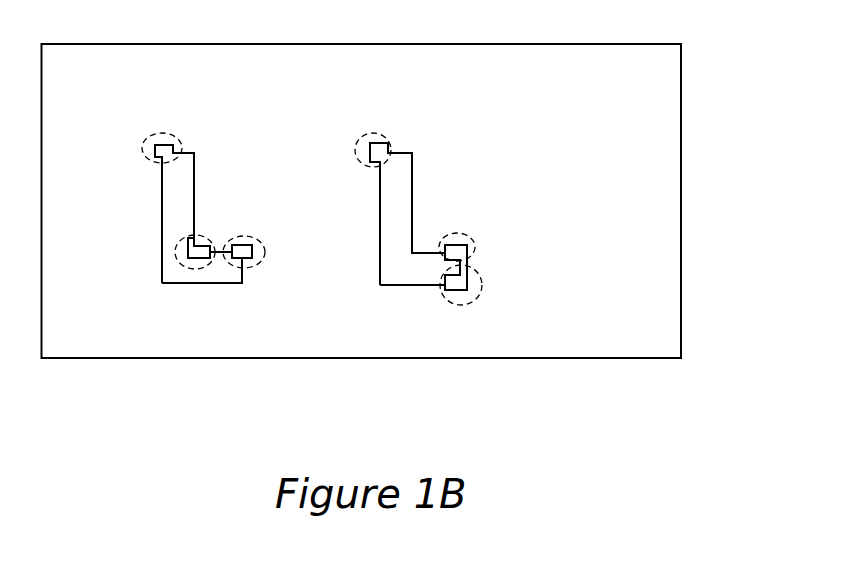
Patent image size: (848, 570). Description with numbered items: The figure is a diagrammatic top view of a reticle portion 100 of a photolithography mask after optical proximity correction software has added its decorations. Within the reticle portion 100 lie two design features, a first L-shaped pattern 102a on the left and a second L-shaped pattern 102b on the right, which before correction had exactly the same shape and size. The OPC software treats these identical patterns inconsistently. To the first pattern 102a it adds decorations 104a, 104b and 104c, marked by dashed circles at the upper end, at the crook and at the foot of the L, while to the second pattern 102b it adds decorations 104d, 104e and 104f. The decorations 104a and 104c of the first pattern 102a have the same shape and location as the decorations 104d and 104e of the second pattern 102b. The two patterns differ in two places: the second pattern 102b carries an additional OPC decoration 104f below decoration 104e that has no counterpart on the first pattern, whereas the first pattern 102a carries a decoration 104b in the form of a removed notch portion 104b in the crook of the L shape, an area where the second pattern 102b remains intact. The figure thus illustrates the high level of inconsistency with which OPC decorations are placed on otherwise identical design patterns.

The reticle portion 100 is at (655, 115).
The first L-shaped pattern 102a is at (188, 181).
The second L-shaped pattern 102b is at (408, 182).
The OPC decoration 104a is at (158, 133).
The removed notch portion 104b is at (208, 241).
The OPC decoration 104c is at (255, 263).
The OPC decoration 104d is at (388, 137).
The OPC decoration 104e is at (458, 238).
The additional OPC decoration 104f is at (473, 300).